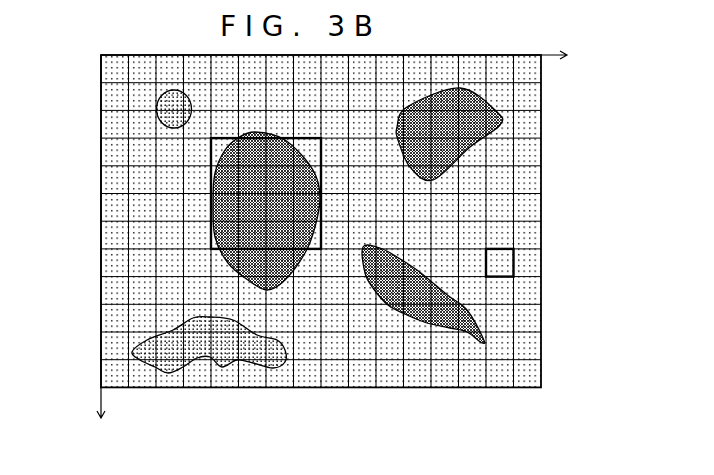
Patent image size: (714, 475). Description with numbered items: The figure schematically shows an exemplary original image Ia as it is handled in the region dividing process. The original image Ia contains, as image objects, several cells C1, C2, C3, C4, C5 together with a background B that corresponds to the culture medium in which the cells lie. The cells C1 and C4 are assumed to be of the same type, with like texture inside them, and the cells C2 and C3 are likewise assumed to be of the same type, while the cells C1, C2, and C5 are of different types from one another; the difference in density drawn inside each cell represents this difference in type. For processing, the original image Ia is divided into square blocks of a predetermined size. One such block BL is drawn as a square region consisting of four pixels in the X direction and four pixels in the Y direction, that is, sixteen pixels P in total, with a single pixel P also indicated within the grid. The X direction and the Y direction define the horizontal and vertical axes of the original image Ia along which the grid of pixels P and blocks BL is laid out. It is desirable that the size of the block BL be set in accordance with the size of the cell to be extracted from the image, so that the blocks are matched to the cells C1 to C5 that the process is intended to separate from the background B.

The original image Ia is at (541, 123).
The background B is at (498, 213).
The pixel P is at (514, 262).
The block BL is at (210, 150).
The cell C1 is at (156, 108).
The cell C2 is at (213, 205).
The cell C3 is at (500, 125).
The cell C4 is at (182, 323).
The cell C5 is at (473, 318).
The X direction X is at (345, 56).
The Y direction Y is at (84, 238).